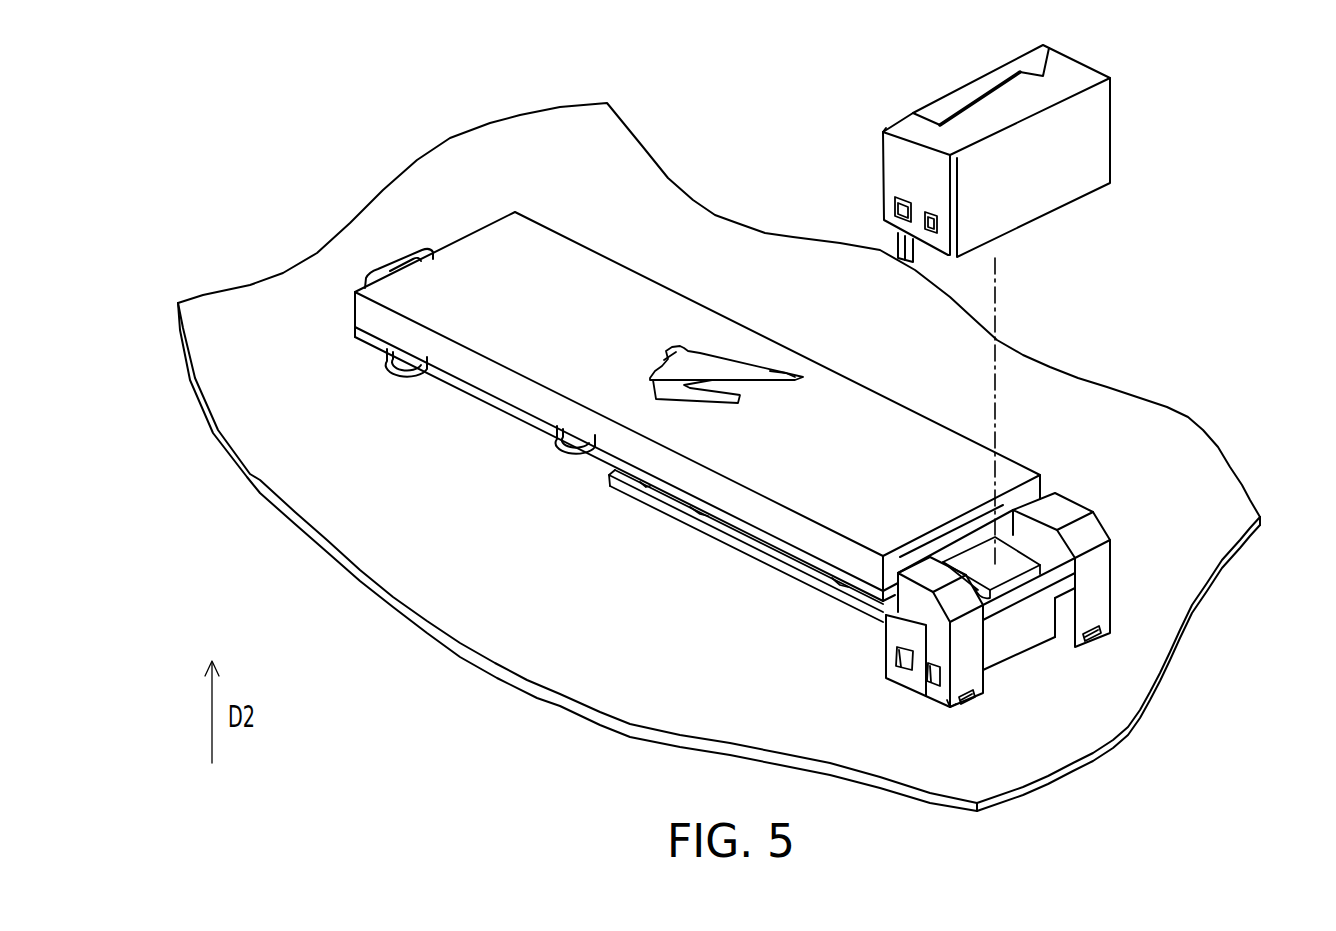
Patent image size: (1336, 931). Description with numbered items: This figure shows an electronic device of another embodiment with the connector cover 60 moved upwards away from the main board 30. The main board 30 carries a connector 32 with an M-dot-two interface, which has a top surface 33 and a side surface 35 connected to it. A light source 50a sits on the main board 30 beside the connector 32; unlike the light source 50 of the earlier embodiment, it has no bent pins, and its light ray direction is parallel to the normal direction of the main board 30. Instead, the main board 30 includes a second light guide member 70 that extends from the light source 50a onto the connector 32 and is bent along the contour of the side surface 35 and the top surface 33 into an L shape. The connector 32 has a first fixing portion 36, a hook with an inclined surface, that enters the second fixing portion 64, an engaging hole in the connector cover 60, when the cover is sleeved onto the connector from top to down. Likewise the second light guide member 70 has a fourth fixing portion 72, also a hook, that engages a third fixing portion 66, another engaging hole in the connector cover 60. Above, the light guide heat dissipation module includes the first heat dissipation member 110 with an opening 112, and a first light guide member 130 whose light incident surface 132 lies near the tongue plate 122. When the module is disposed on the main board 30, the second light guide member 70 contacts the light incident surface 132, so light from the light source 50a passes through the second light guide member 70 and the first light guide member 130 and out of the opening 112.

The main board 30 is at (1143, 717).
The connector 32 is at (906, 685).
The top surface 33 is at (888, 617).
The side surface 35 is at (1022, 642).
The first fixing portion 36 is at (897, 657).
The light source 50 is at (1097, 637).
The light source 50a is at (972, 702).
The connector cover 60 is at (1088, 78).
The second fixing portion 64 is at (891, 219).
The third fixing portion 66 is at (920, 240).
The second light guide member 70 is at (950, 710).
The fourth fixing portion 72 is at (930, 683).
The first heat dissipation member 110 is at (608, 375).
The opening 112 is at (723, 346).
The tongue plate 122 is at (1040, 568).
The first light guide member 130 is at (1042, 615).
The light incident surface 132 is at (979, 537).